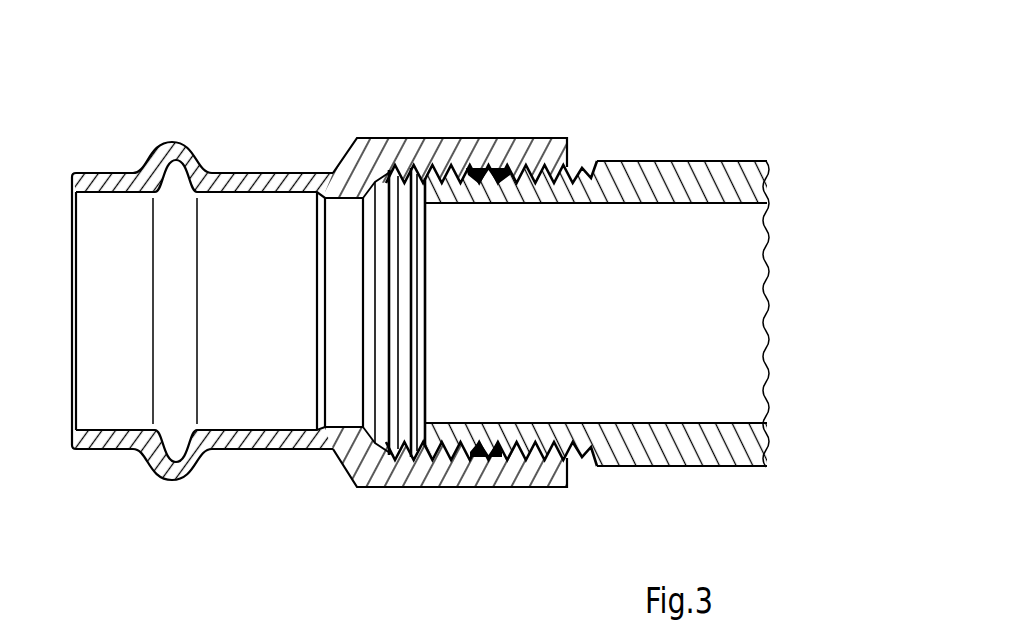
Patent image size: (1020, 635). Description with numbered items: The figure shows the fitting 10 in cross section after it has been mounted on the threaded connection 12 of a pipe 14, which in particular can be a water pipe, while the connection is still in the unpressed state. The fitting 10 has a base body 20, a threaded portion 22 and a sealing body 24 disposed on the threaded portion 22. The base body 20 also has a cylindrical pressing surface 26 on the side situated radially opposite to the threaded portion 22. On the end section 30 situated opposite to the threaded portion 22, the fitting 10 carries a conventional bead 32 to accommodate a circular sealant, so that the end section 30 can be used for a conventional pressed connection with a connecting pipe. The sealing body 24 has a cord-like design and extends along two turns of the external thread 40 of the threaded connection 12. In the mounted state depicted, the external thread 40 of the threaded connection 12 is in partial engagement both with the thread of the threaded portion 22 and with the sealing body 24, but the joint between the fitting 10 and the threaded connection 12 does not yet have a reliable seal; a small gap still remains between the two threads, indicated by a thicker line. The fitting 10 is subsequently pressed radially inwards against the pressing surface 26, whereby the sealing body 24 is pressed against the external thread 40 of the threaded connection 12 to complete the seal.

The fitting 10 is at (284, 112).
The threaded connection 12 is at (575, 468).
The pipe 14 is at (732, 453).
The base body 20 is at (371, 155).
The threaded portion 22 is at (543, 167).
The sealing body 24 is at (482, 167).
The pressing surface 26 is at (428, 138).
The end section 30 is at (107, 148).
The bead 32 is at (168, 148).
The external thread 40 is at (527, 458).